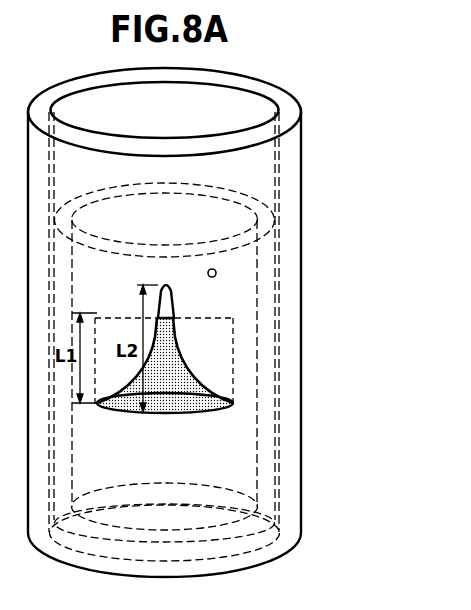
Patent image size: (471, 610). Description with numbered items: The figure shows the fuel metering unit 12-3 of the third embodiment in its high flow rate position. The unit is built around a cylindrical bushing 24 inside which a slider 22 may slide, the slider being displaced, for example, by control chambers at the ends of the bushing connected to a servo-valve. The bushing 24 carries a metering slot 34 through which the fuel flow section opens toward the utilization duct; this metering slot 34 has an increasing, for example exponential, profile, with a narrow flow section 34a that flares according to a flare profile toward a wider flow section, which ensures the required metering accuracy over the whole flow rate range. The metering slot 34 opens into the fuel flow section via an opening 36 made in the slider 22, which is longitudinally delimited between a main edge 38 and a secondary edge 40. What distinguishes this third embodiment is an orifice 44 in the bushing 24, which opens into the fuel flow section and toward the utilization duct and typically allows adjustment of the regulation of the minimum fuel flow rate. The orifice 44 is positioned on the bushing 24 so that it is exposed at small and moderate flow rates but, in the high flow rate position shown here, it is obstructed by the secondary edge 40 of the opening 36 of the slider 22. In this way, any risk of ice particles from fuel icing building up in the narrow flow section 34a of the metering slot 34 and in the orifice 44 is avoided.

The fuel metering unit 12-3 is at (303, 237).
The bushing 24 is at (267, 92).
The slider 22 is at (169, 197).
The orifice 44 is at (216, 272).
The secondary edge 40 is at (120, 318).
The opening 36 is at (233, 358).
The metering slot 34 is at (210, 403).
The narrow flow section 34a is at (182, 285).
The main edge 38 is at (120, 403).